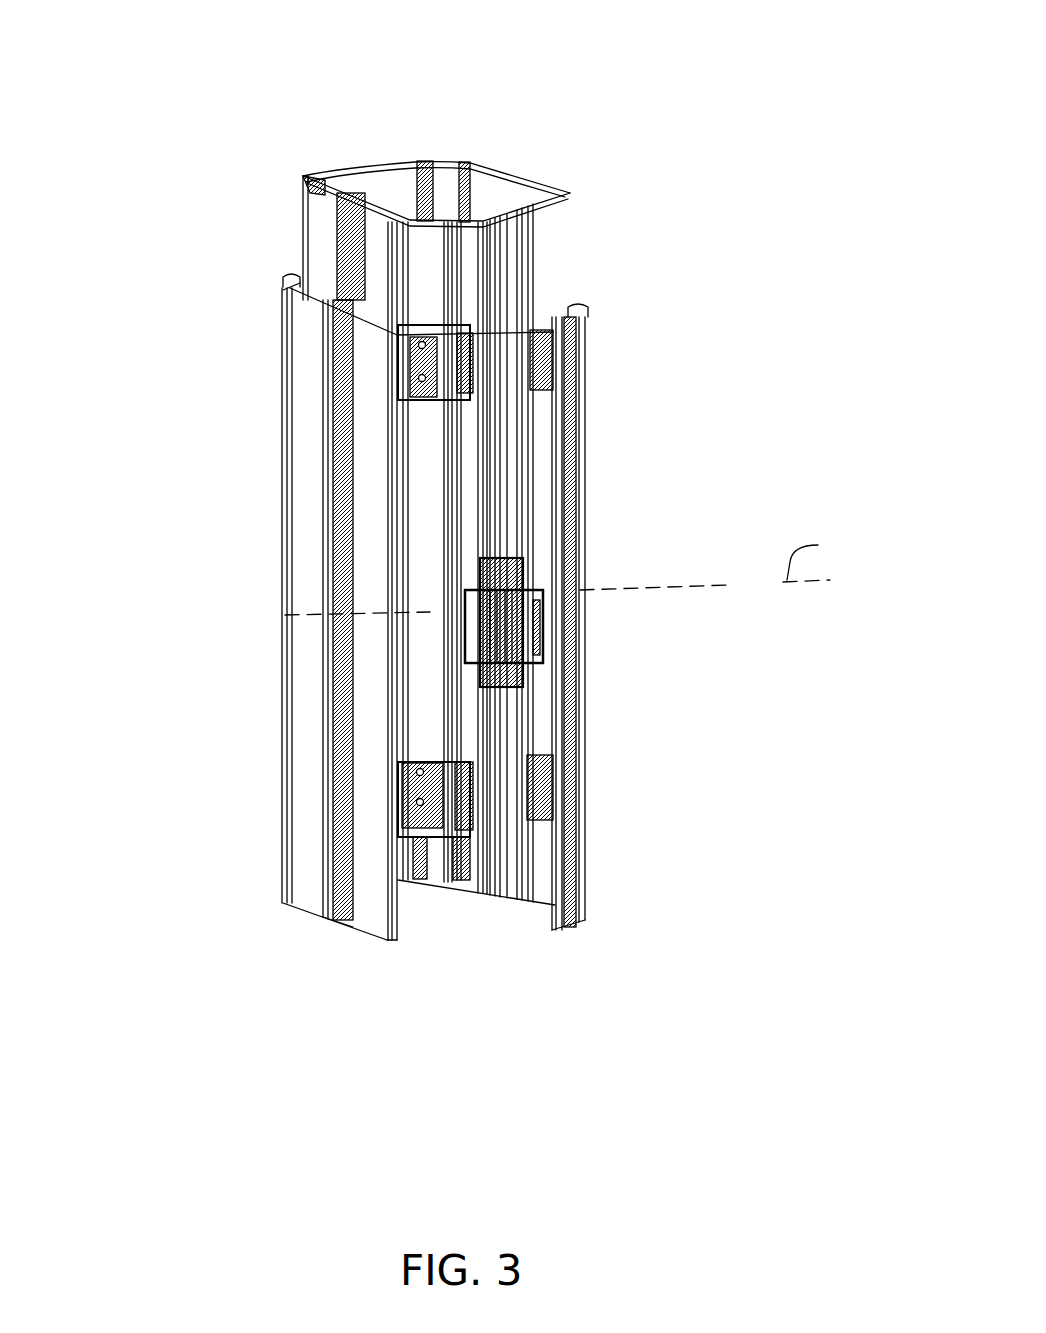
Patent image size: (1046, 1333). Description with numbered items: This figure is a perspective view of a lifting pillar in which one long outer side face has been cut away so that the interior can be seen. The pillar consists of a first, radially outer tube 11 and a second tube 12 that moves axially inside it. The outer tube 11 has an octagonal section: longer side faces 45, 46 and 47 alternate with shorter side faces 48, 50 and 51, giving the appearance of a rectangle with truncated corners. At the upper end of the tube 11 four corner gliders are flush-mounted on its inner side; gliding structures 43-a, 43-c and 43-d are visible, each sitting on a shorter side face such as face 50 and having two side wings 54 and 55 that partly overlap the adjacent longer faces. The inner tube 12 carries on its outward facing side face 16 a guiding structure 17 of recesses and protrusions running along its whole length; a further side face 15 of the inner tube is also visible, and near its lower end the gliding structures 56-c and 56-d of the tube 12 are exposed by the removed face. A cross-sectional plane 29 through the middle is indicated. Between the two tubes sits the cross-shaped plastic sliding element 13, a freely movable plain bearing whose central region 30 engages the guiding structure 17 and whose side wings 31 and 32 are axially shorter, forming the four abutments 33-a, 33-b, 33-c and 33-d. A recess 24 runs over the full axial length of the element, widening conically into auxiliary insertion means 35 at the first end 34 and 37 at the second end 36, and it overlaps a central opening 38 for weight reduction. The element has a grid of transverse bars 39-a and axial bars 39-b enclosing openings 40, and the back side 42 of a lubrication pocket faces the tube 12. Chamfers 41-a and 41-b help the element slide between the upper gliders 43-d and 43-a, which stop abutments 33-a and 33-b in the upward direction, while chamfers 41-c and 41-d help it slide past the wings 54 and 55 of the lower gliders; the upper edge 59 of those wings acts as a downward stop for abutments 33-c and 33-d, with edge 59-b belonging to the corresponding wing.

The side face 51 is at (495, 177).
The side face 48 is at (300, 172).
The side face 46 is at (370, 180).
The first tube 11 is at (315, 409).
The side face 47 is at (507, 218).
The guiding structure 17 is at (521, 217).
The second tube 12 is at (542, 231).
The side wall 15 is at (585, 200).
The side face 16 is at (542, 260).
The side wing 54 is at (545, 330).
The gliding structure 43-a is at (588, 305).
The side face 50 is at (583, 340).
The auxiliary insertion means 35 is at (584, 345).
The first end 34 is at (530, 585).
The recess 24 is at (530, 580).
The chamfer 41-b is at (530, 590).
The sliding element 13 is at (545, 595).
The abutment 33-b is at (535, 585).
The bars 39-a is at (535, 592).
The cross-sectional plane 29 is at (573, 574).
The opening 38 is at (545, 618).
The openings 40 is at (548, 625).
The side wing 31 is at (548, 640).
The abutment 33-c is at (535, 690).
The bars 39-b is at (560, 700).
The chamfer 41-c is at (560, 700).
The second end 36 is at (545, 740).
The foot 59-b is at (553, 830).
The gliding structure 56-d is at (560, 900).
The auxiliary insertion means 37 is at (570, 925).
The side wing 55 is at (560, 890).
The central region 30 is at (497, 820).
The gliding structure 56-c is at (405, 850).
The upper edge 59 is at (423, 880).
The gliding structure 43-c is at (283, 290).
The side face 45 is at (310, 355).
The gliding structure 43-d is at (425, 335).
The chamfer 41-a is at (477, 567).
The abutment 33-a is at (470, 585).
The back side of a lubrication pocket 42 is at (465, 645).
The side wing 32 is at (470, 660).
The abutment 33-d is at (480, 675).
The chamfer 41-d is at (485, 685).